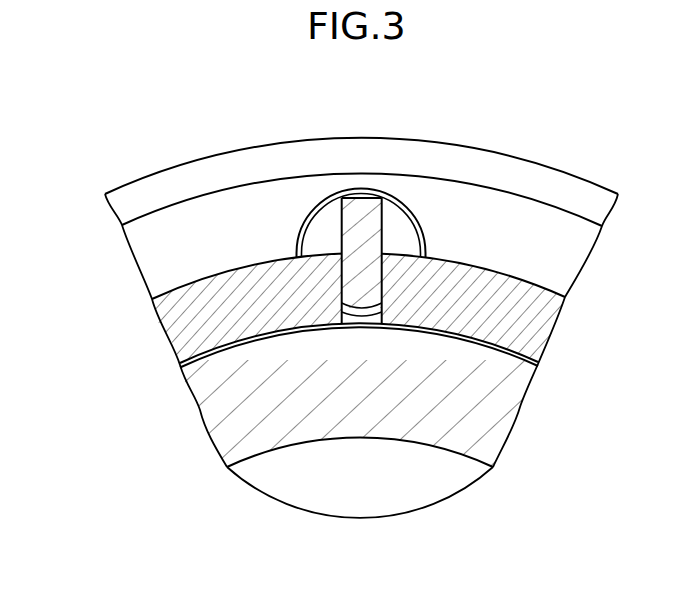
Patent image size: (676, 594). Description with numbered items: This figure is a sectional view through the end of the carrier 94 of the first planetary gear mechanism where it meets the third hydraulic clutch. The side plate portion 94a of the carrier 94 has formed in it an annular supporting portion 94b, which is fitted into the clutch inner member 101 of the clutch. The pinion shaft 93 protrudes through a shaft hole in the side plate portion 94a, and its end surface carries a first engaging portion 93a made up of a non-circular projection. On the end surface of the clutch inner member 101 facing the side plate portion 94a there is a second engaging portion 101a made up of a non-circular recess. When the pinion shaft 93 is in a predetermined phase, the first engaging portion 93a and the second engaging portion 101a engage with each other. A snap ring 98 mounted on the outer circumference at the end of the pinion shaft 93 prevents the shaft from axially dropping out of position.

The pinion shaft 93 is at (418, 197).
The first engaging portion 93a is at (378, 229).
The carrier 94 is at (186, 159).
The side plate portion 94a is at (508, 210).
The annular supporting portion 94b is at (373, 397).
The snap ring 98 is at (324, 199).
The clutch inner member 101 is at (538, 298).
The second engaging portion 101a is at (340, 276).